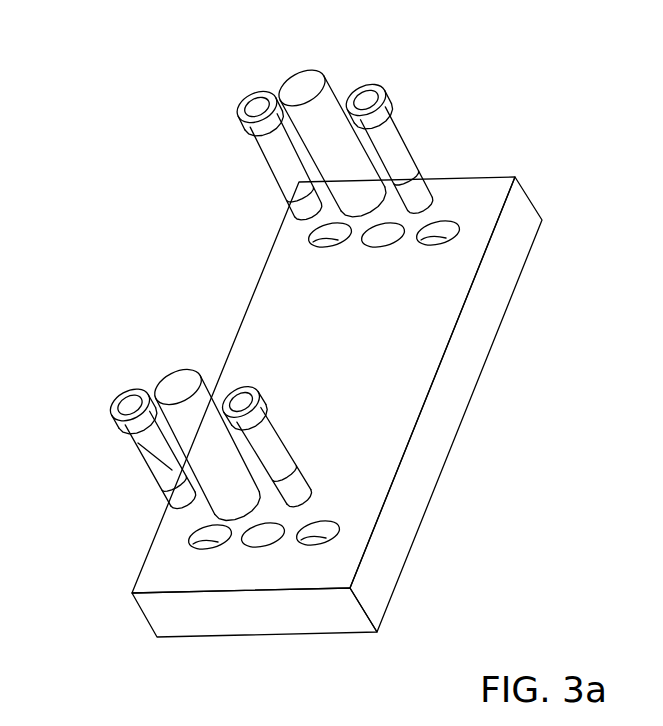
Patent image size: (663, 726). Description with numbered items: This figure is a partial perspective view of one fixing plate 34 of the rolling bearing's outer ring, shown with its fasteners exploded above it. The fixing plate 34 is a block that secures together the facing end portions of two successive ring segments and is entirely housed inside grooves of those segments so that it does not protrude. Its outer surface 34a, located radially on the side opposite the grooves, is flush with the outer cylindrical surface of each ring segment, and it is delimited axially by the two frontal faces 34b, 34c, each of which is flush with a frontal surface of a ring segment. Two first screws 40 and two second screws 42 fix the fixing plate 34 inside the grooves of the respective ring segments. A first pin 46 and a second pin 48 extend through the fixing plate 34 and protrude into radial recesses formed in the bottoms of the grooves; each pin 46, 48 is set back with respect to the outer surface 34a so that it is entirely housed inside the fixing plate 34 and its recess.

The fixing plate 34 is at (338, 338).
The outer surface 34a is at (360, 351).
The frontal face 34b is at (522, 217).
The frontal face 34c is at (143, 623).
The first screw 40 is at (350, 84).
The second screw 42 is at (233, 435).
The first pin 46 is at (338, 162).
The second pin 48 is at (220, 472).